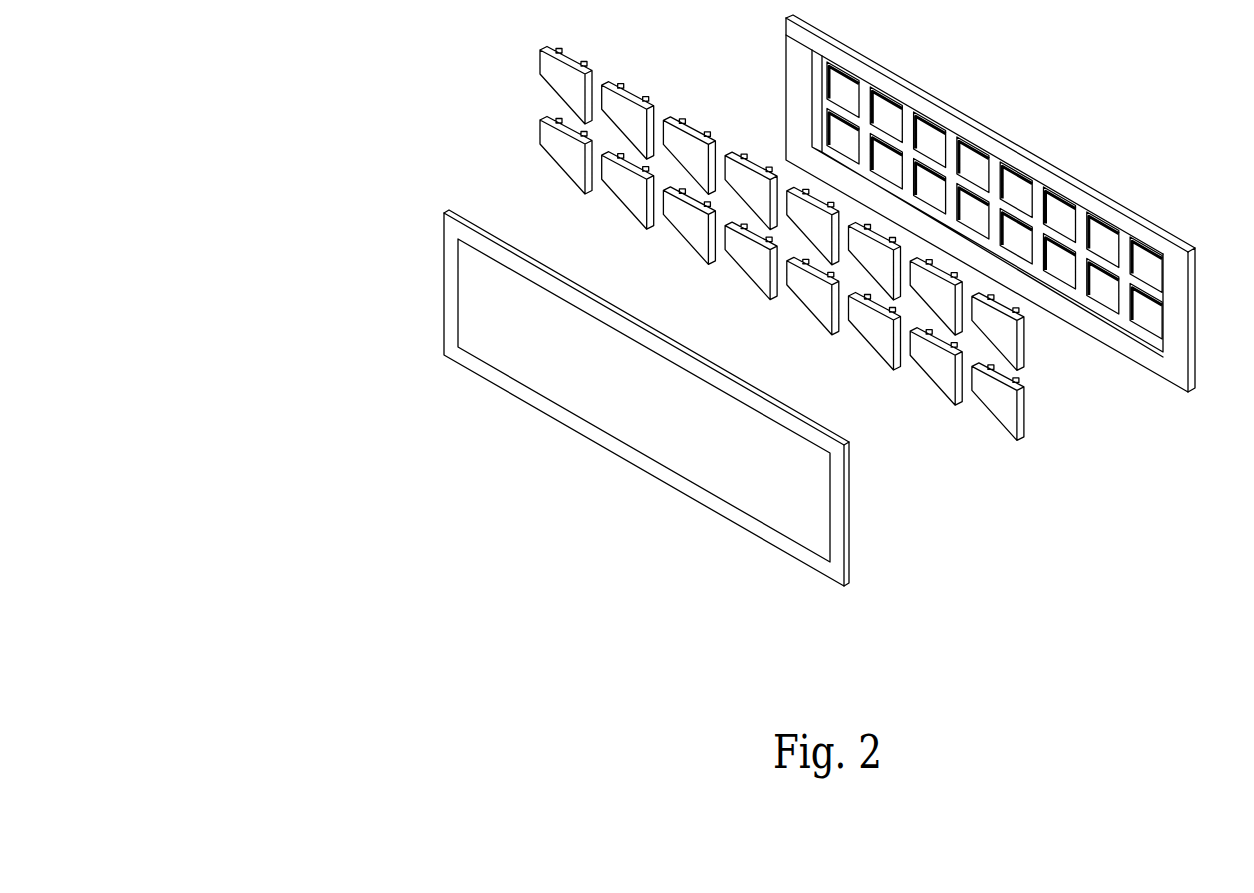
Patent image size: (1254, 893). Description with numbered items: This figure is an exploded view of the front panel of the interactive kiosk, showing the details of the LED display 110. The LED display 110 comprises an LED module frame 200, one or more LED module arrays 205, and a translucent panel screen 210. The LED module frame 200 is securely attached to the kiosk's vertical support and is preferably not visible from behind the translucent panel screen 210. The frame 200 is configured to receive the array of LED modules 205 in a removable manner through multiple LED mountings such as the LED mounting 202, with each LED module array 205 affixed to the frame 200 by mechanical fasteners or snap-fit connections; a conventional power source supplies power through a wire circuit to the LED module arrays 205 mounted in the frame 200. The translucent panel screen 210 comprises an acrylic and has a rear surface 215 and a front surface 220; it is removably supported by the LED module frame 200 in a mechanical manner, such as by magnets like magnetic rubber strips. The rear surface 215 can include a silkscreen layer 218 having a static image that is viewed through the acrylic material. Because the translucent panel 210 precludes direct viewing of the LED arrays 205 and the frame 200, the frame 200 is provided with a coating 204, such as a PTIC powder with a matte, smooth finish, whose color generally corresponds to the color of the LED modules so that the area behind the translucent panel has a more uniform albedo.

The LED display 110 is at (329, 206).
The LED module frame 200 is at (1176, 404).
The LED mounting 202 is at (1143, 257).
The coating 204 is at (1002, 131).
The LED module arrays 205 is at (1020, 468).
The translucent panel screen 210 is at (827, 596).
The rear surface 215 is at (478, 232).
The silkscreen layer 218 is at (848, 537).
The front surface 220 is at (763, 530).